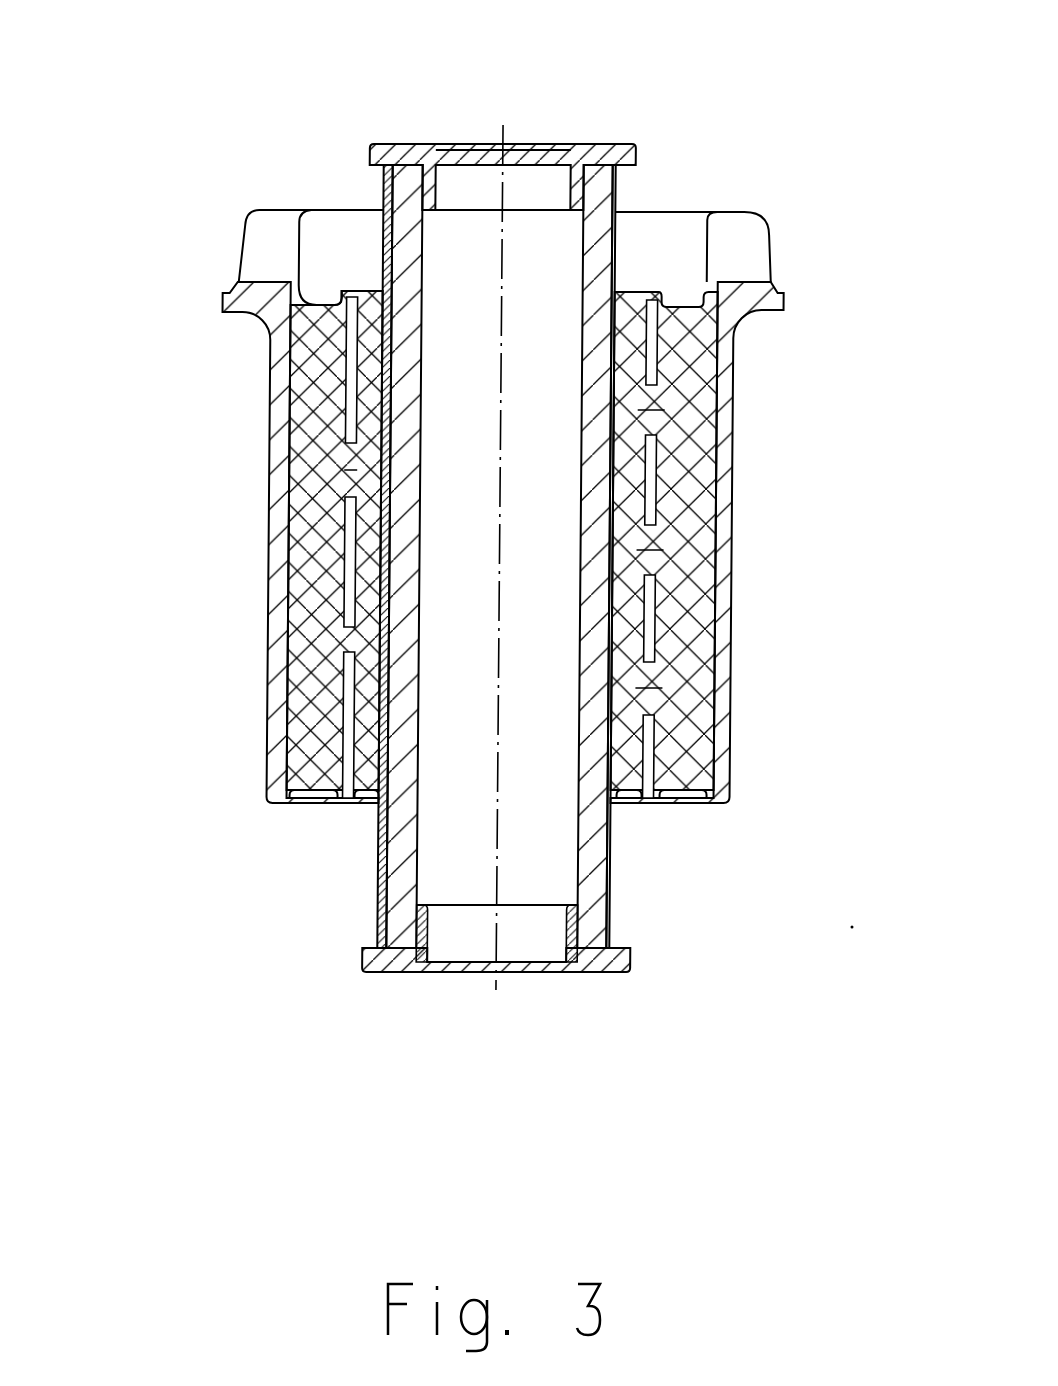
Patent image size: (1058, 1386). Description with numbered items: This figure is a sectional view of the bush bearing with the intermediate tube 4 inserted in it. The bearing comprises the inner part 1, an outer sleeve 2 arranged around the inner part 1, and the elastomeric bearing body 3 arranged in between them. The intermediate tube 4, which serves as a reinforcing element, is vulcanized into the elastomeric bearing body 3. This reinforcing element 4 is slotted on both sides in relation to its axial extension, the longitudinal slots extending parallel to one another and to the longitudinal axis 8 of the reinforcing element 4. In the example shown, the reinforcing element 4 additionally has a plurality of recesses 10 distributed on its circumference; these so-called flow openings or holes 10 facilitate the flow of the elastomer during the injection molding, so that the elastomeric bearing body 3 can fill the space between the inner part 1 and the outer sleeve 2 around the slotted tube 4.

The inner part 1 is at (590, 715).
The outer sleeve 2 is at (727, 428).
The elastomeric bearing body 3 is at (687, 532).
The intermediate tube 4 is at (348, 673).
The longitudinal axis 8 is at (638, 67).
The flow holes 10 is at (352, 470).